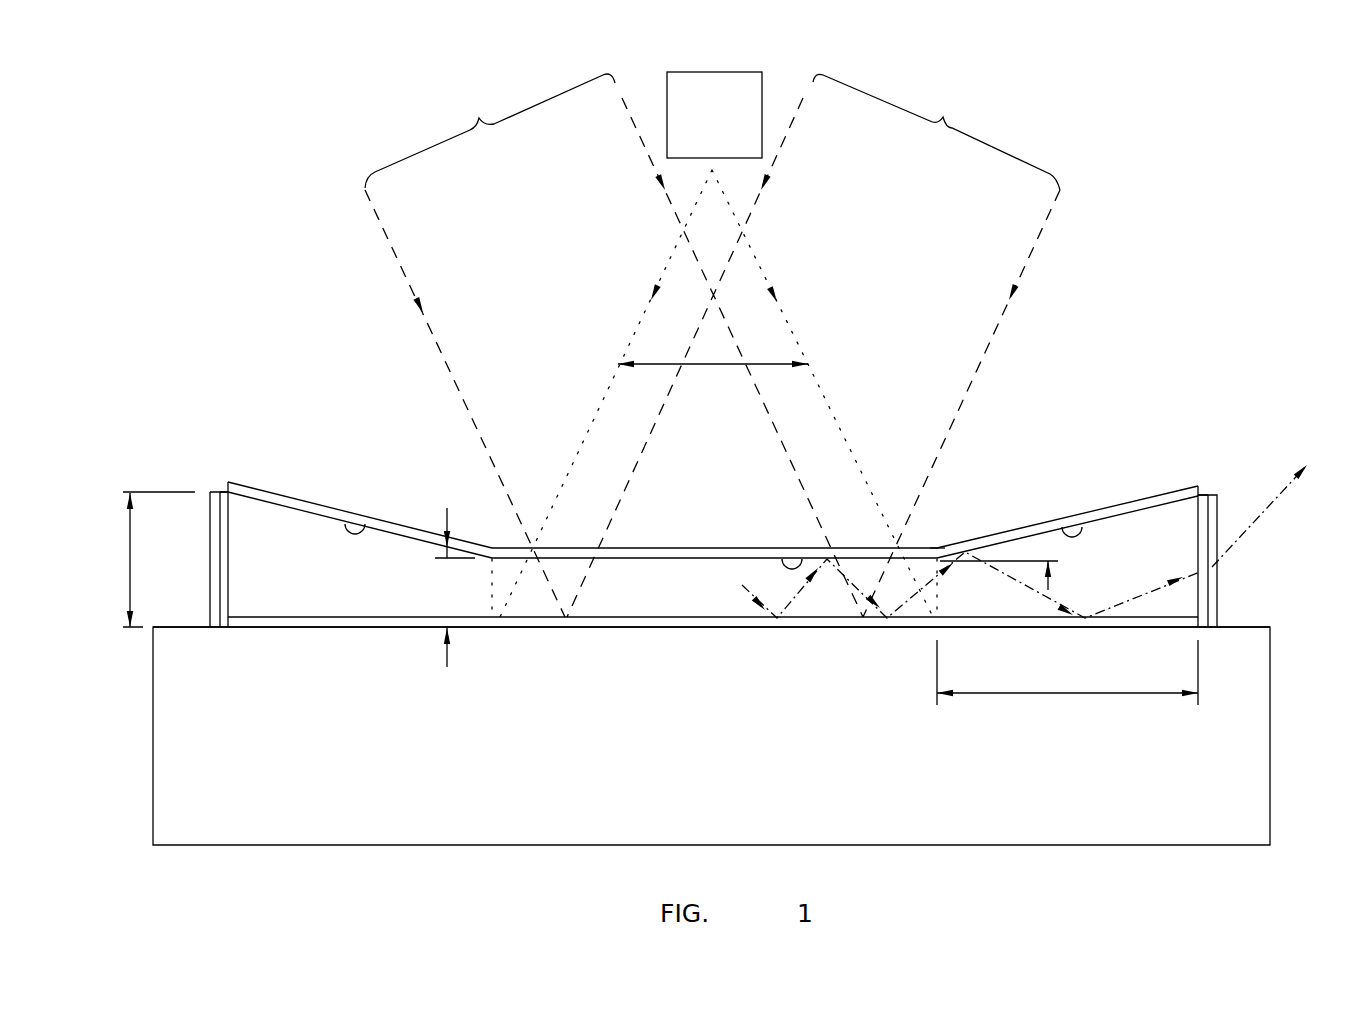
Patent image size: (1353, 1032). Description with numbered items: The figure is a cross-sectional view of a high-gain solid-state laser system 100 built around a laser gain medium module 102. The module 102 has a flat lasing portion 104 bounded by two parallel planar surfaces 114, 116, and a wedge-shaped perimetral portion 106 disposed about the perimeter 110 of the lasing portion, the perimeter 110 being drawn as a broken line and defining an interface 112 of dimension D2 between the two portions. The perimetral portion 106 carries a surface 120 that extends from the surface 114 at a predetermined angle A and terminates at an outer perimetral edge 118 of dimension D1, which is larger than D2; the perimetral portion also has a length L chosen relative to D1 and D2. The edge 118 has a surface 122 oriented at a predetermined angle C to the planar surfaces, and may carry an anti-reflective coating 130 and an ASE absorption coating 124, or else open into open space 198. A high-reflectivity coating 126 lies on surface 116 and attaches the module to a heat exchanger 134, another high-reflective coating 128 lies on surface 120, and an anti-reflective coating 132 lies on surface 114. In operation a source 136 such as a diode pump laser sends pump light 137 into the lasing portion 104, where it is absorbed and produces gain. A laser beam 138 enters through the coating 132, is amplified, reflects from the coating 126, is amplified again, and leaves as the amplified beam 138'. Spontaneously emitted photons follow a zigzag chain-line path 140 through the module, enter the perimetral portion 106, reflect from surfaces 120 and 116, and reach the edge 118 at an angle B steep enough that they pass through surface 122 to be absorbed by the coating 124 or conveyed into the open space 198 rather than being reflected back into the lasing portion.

The high-gain solid-state laser system 100 is at (1152, 135).
The laser gain medium module 102 is at (585, 532).
The lasing portion 104 is at (684, 597).
The perimetral portion 106 is at (384, 611).
The perimeter 110 is at (493, 618).
The interface 112 is at (505, 553).
The planar surface 114 is at (802, 559).
The planar surface 116 is at (613, 618).
The outer perimetral edge 118 is at (223, 510).
The perimetral surface 120 is at (347, 522).
The surface of the outer perimetral edge 122 is at (232, 529).
The ASE absorption coating 124 is at (215, 492).
The high-reflectivity coating 126 is at (717, 630).
The high-reflective coating 128 is at (282, 494).
The anti-reflective coating 130 is at (223, 492).
The anti-reflective coating 132 is at (912, 542).
The heat exchanger 134 is at (575, 835).
The source 136 is at (743, 72).
The pump light 137 is at (668, 364).
The laser beam 138 is at (490, 345).
The amplified laser beam 138' is at (936, 345).
The spontaneously emitted photon 140 is at (750, 590).
The open space 198 is at (1348, 557).
The predetermined angle A is at (1034, 510).
The angle of incidence B is at (1230, 619).
The predetermined angle C is at (287, 598).
The dimension of outer perimetral edge D1 is at (128, 578).
The dimension of interface D2 is at (447, 512).
The length of perimetral portion L is at (1076, 698).